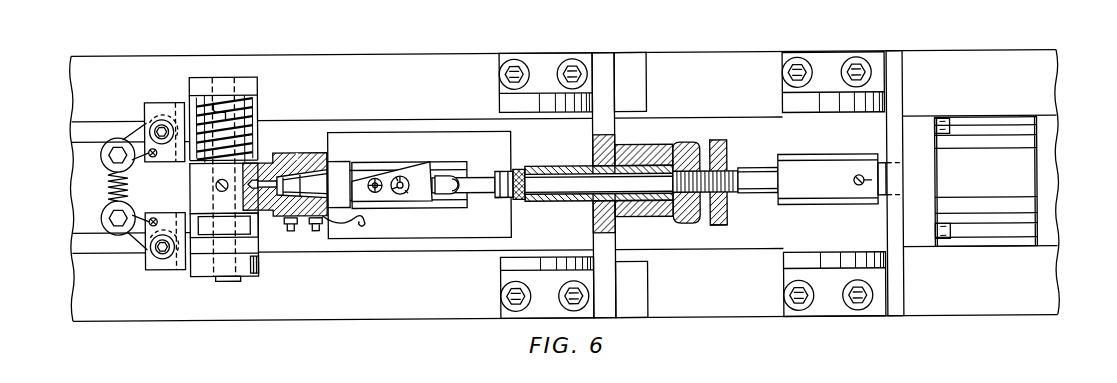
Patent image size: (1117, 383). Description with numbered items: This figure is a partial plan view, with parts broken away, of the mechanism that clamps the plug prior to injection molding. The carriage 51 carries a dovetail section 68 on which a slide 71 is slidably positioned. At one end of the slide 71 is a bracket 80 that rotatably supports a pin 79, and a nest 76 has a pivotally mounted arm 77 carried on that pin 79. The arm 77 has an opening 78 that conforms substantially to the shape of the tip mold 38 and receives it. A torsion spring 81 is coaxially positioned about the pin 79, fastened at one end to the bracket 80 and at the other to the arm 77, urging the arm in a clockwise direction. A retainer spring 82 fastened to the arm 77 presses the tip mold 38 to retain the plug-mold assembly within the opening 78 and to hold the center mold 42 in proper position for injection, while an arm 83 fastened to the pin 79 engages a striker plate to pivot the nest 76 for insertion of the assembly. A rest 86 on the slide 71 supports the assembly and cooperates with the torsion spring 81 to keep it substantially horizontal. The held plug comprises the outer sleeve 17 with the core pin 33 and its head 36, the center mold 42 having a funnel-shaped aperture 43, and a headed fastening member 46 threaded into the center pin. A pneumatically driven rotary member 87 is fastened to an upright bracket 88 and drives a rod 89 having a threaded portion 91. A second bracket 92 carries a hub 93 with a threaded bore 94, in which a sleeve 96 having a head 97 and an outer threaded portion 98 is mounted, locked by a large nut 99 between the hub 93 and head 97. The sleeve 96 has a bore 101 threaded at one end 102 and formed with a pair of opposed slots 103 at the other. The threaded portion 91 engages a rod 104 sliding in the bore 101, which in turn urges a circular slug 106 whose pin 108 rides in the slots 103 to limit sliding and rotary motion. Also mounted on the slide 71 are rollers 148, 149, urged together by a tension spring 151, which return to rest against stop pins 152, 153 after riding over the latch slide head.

The carriage 51 is at (1052, 40).
The dovetail section 68 is at (82, 146).
The roller 149 is at (126, 138).
The roller 148 is at (124, 232).
The tension spring 151 is at (108, 184).
The stop pin 153 is at (155, 155).
The stop pin 152 is at (154, 213).
The bracket 80 is at (258, 90).
The torsion spring 81 is at (258, 134).
The arm 77 is at (268, 222).
The opening 78 is at (300, 164).
The pin 79 is at (226, 280).
The arm 83 is at (256, 275).
The slide 71 is at (303, 251).
The nest 76 is at (289, 142).
The tip mold 38 is at (338, 160).
The rest 86 is at (455, 161).
The center mold 42 is at (410, 200).
The headed fastening member 46 is at (376, 177).
The funnel-shaped aperture 43 is at (400, 175).
The outer sleeve 17 is at (476, 177).
The core pin 33 is at (449, 195).
The head 36 is at (501, 198).
The circular slug 106 is at (503, 171).
The pin 108 is at (517, 199).
The slots 103 is at (522, 167).
The bore 101 is at (578, 192).
The sleeve 96 is at (586, 166).
The hub 93 is at (637, 145).
The rod 104 is at (627, 205).
The threaded bore 94 is at (648, 210).
The outer threaded portion 98 is at (668, 143).
The large nut 99 is at (688, 216).
The head 97 is at (717, 141).
The threaded end 102 is at (727, 205).
The threaded portion 91 is at (730, 170).
The rod 89 is at (762, 170).
The second bracket 92 is at (598, 62).
The upright bracket 88 is at (893, 55).
The pneumatically driven rotary member 87 is at (998, 119).
The retainer spring 82 is at (362, 222).